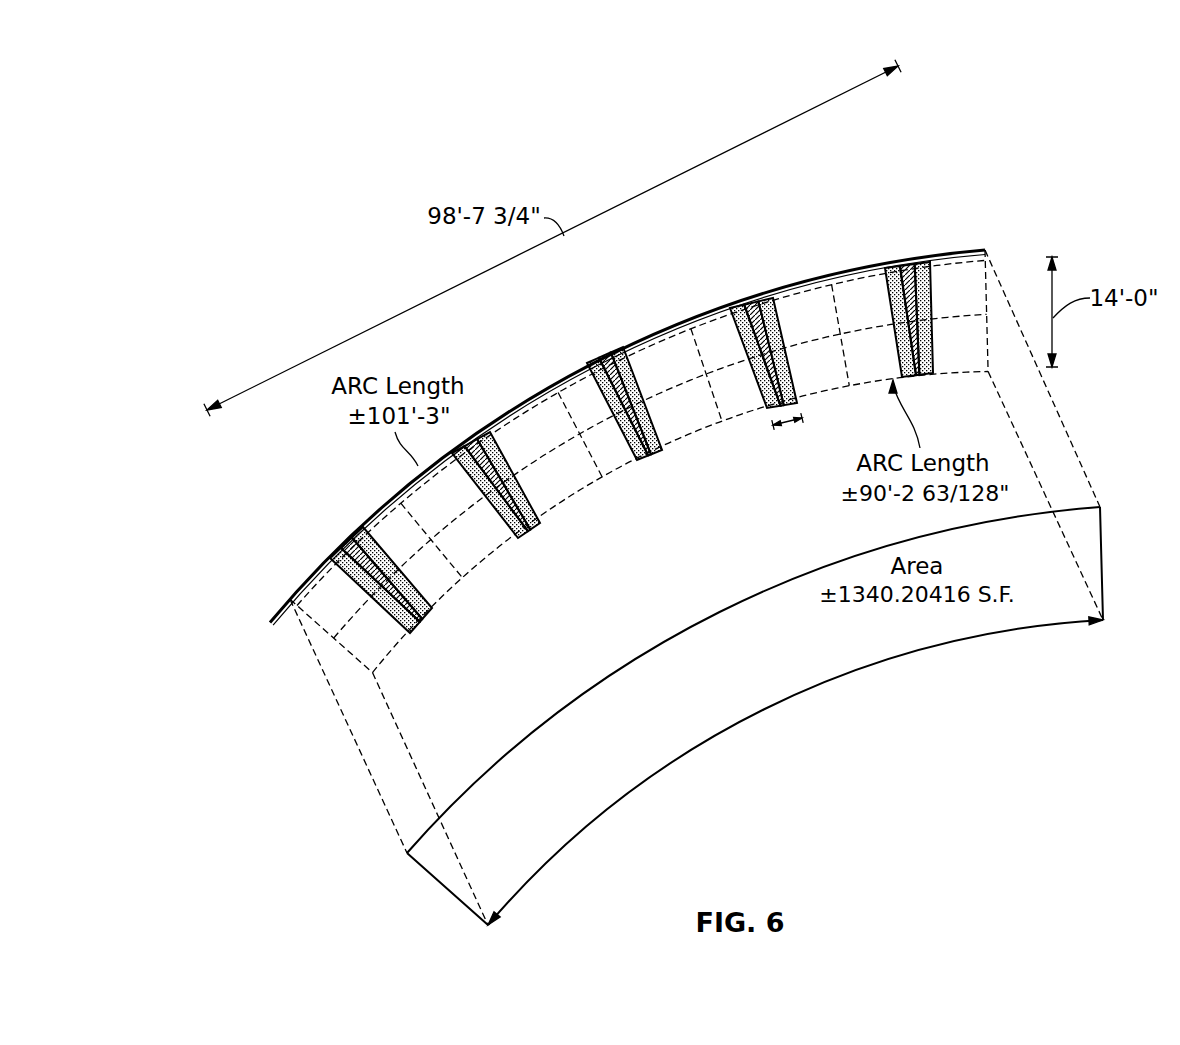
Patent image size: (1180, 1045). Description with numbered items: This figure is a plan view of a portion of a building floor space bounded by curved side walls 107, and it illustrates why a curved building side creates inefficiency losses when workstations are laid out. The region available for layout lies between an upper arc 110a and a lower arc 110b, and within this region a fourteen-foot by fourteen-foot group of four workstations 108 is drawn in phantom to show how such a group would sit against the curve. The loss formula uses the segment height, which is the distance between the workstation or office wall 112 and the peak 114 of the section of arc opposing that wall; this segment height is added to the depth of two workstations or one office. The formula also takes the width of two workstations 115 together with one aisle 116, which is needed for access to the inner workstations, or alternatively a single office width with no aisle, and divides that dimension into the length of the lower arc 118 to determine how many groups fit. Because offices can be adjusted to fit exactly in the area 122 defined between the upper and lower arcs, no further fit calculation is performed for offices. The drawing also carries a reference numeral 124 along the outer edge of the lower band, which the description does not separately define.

The curved side walls 107 is at (313, 532).
The group of four workstations 108 is at (483, 540).
The upper arc 110a is at (698, 314).
The lower arc 110b is at (709, 373).
The workstation or office wall 112 is at (574, 388).
The peak of the section of arc 114 is at (540, 384).
The width of two workstations 115 is at (720, 397).
The aisle 116 is at (787, 413).
The length of the lower arc 118 is at (779, 710).
The area defined between the upper and lower arcs 122 is at (738, 686).
The outer edge of panel layout 124 is at (710, 620).